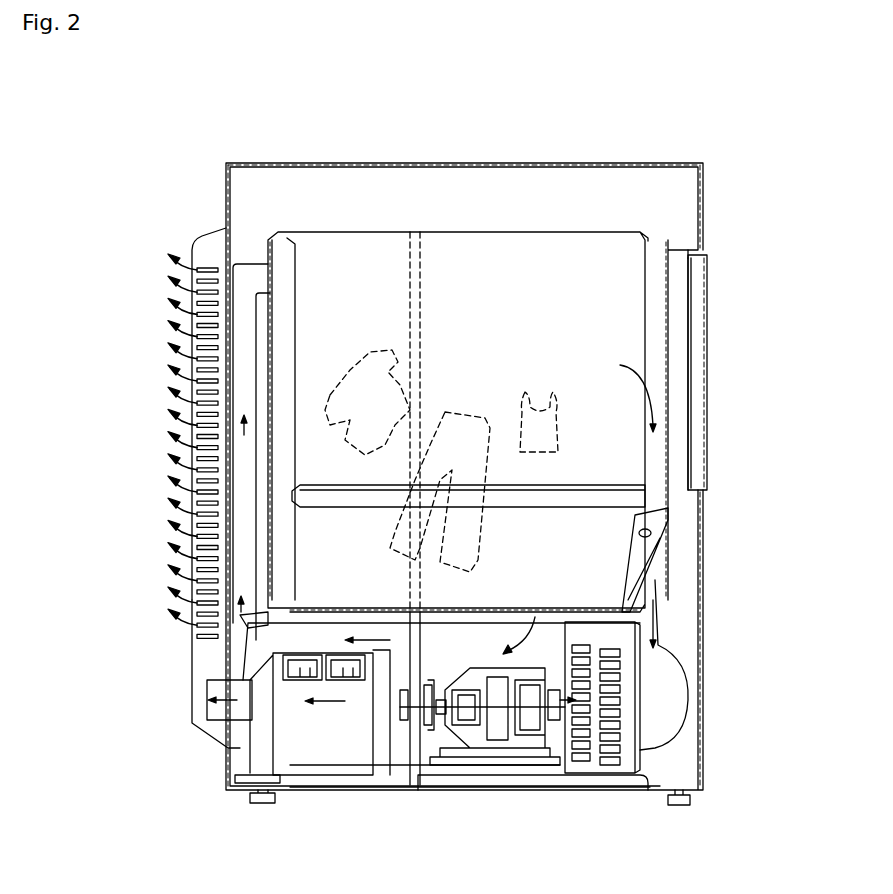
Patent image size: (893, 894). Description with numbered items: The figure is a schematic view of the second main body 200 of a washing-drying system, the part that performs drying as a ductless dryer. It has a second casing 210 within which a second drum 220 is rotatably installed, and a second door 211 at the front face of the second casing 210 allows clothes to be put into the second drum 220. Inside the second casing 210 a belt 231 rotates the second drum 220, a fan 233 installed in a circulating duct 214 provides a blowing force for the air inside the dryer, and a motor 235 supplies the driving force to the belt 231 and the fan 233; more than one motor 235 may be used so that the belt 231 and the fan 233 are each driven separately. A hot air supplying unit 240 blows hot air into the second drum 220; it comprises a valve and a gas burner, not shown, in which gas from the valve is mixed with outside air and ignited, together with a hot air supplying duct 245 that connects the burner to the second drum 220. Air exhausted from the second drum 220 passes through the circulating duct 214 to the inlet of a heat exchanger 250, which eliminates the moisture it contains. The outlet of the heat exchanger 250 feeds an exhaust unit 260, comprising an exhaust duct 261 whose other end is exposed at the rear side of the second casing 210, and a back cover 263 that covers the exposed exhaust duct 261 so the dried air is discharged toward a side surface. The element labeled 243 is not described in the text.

The second main body 200 is at (158, 134).
The second casing 210 is at (285, 163).
The second door 211 is at (707, 356).
The circulating duct 214 is at (633, 783).
The second drum 220 is at (526, 233).
The belt 231 is at (417, 785).
The fan 233 is at (582, 757).
The motor 235 is at (497, 735).
The hot air supplying unit 240 is at (246, 640).
The duct inlet 243 is at (250, 623).
The hot air supplying duct 245 is at (240, 383).
The heat exchanger 250 is at (310, 757).
The exhaust unit 260 is at (93, 660).
The exhaust duct 261 is at (210, 710).
The back cover 263 is at (197, 669).